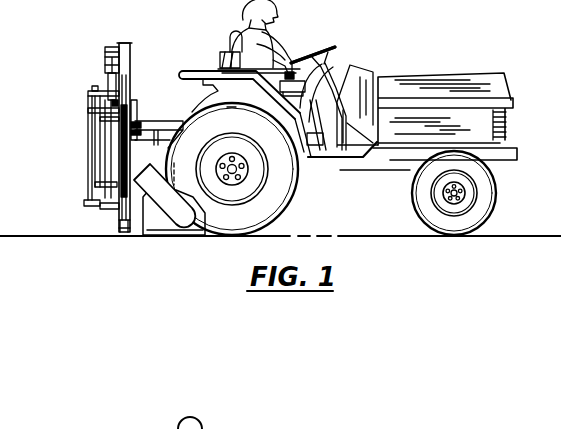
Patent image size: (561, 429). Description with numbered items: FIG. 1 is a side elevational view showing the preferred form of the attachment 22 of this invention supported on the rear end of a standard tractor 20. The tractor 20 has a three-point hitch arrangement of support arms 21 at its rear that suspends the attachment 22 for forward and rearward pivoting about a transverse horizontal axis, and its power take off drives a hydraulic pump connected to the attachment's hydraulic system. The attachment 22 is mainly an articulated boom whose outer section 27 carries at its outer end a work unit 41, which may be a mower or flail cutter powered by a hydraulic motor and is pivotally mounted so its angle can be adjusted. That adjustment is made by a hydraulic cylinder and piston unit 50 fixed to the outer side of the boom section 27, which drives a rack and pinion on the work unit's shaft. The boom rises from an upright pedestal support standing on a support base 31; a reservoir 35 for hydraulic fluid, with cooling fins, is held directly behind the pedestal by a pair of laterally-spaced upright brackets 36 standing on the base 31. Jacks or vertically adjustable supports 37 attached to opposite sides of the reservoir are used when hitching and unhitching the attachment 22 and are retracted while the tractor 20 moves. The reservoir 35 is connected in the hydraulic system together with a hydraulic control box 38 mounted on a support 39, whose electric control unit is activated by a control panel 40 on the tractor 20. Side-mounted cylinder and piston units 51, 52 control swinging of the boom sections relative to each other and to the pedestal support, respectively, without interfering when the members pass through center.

The tractor 20 is at (439, 72).
The support arms 21 is at (167, 121).
The attachment 22 is at (132, 55).
The outer section 27 is at (125, 232).
The support base 31 is at (108, 208).
The reservoir 35 is at (88, 109).
The upright brackets 36 is at (112, 157).
The jacks or vertically adjustable supports 37 is at (98, 205).
The hydraulic control box 38 is at (144, 134).
The support 39 is at (148, 133).
The control panel 40 is at (292, 62).
The work unit 41 is at (170, 236).
The hydraulic cylinder and piston unit 50 is at (97, 95).
The cylinder and piston unit 51 is at (108, 62).
The cylinder and piston unit 52 is at (103, 117).